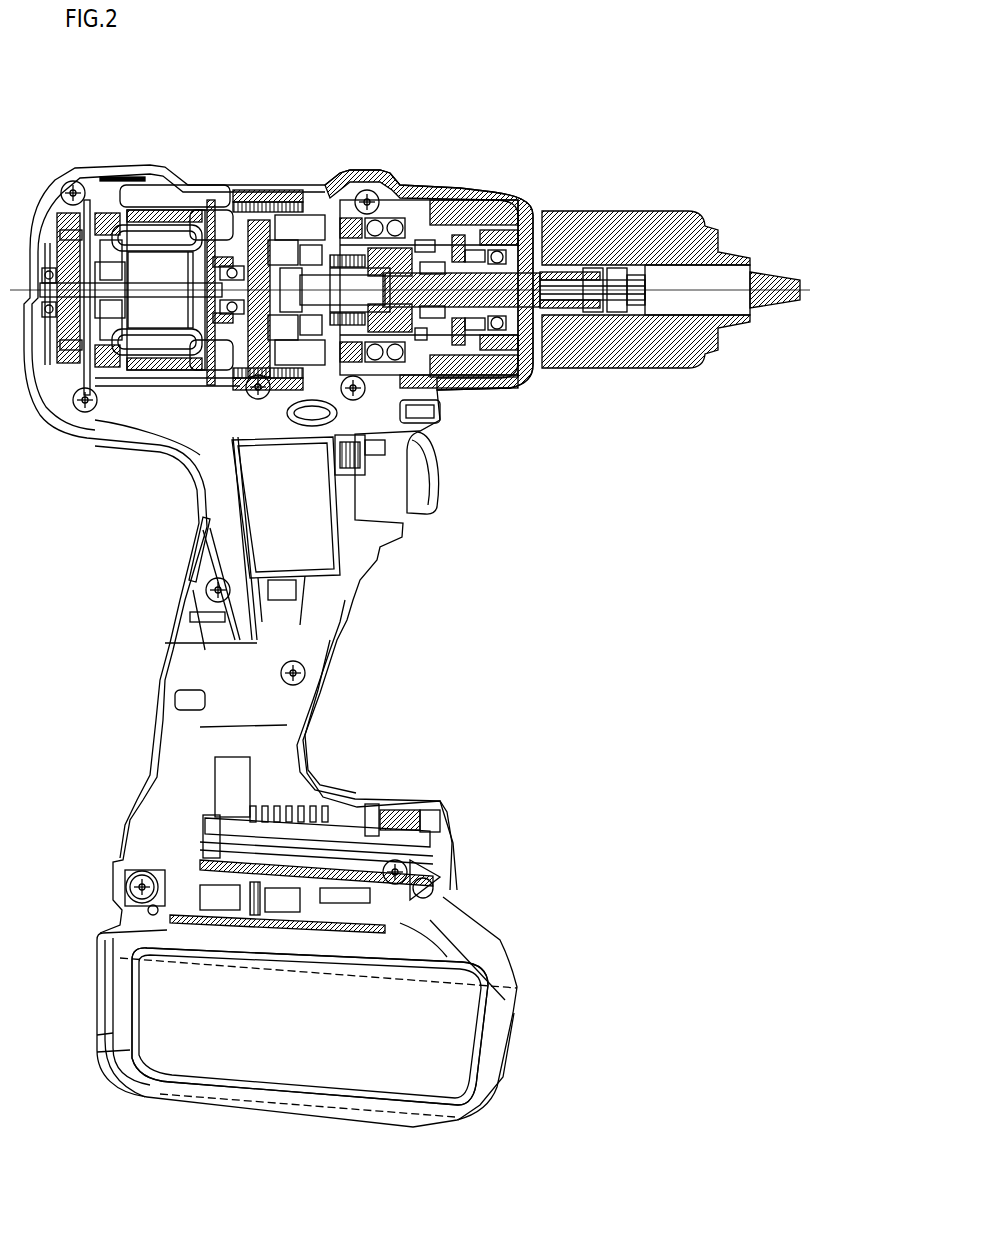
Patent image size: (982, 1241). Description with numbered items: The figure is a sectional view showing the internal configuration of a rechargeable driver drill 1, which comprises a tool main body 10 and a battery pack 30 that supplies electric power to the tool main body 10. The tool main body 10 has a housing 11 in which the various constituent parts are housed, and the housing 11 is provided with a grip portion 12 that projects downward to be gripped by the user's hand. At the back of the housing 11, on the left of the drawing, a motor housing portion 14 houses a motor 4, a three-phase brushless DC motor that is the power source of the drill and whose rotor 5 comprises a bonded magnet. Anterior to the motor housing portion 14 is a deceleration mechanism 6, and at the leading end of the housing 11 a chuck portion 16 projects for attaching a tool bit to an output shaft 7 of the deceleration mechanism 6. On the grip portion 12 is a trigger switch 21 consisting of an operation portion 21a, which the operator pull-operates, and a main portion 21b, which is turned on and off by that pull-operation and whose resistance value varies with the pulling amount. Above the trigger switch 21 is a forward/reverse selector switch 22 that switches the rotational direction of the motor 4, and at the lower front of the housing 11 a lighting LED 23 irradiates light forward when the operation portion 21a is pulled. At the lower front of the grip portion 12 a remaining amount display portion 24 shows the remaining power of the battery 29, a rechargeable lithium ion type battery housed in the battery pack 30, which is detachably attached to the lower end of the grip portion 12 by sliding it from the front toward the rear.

The rechargeable driver drill 1 is at (477, 89).
The motor 4 is at (157, 212).
The rotor 5 is at (178, 268).
The deceleration mechanism 6 is at (297, 240).
The output shaft 7 is at (437, 274).
The tool main body 10 is at (477, 179).
The housing 11 is at (88, 166).
The grip portion 12 is at (349, 657).
The motor housing portion 14 is at (89, 437).
The chuck portion 16 is at (712, 360).
The trigger switch 21 is at (429, 544).
The operation portion 21a is at (412, 512).
The main portion 21b is at (307, 547).
The forward/reverse selector switch 22 is at (367, 447).
The lighting LED 23 is at (445, 411).
The remaining amount display portion 24 is at (398, 805).
The battery 29 is at (500, 1032).
The battery pack 30 is at (376, 1012).